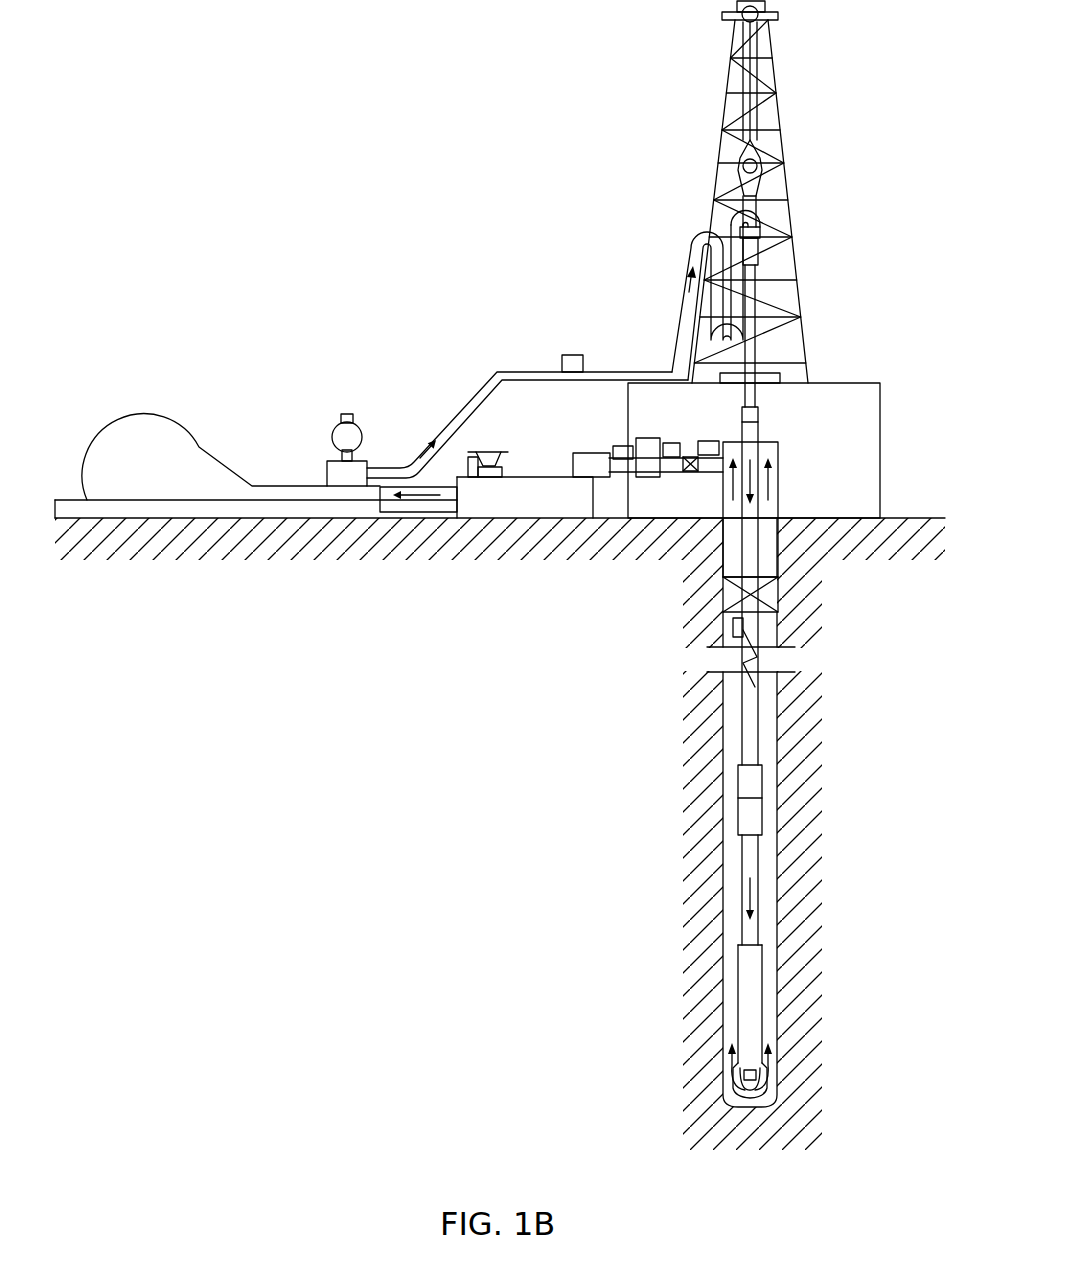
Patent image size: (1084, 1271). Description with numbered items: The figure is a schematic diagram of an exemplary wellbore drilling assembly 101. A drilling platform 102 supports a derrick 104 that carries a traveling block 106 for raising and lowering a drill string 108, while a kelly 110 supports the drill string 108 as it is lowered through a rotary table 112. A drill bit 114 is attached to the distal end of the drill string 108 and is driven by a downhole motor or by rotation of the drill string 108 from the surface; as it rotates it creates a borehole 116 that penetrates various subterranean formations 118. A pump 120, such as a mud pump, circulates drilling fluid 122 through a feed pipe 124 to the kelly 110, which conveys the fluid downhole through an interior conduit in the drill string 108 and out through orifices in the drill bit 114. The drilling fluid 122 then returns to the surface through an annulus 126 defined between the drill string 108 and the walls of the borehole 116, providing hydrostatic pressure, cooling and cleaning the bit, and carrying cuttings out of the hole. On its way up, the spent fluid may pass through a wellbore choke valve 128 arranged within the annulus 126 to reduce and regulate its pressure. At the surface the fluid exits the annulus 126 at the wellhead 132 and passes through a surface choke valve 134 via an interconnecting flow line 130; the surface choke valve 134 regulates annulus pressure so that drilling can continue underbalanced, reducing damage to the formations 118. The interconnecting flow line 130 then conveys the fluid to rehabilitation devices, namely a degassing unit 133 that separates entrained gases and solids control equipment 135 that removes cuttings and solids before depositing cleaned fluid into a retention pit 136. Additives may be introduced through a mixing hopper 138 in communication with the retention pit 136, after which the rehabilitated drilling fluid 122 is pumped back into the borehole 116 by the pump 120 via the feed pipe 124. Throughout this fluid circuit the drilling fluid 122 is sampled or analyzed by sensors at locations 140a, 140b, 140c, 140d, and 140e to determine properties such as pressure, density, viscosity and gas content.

The wellbore drilling assembly 101 is at (458, 88).
The drilling platform 102 is at (880, 390).
The derrick 104 is at (790, 103).
The traveling block 106 is at (766, 152).
The drill string 108 is at (760, 640).
The kelly 110 is at (752, 288).
The rotary table 112 is at (796, 380).
The drill bit 114 is at (770, 1082).
The borehole 116 is at (790, 723).
The subterranean formations 118 is at (611, 766).
The pump 120 is at (159, 481).
The drilling fluid 122 is at (408, 469).
The feed pipe 124 is at (493, 362).
The annulus 126 is at (765, 897).
The wellbore choke valve 128 is at (785, 590).
The interconnecting flow line 130 is at (718, 522).
The wellhead 132 is at (775, 425).
The degassing unit 133 is at (640, 475).
The surface choke valve 134 is at (691, 471).
The solids control equipment 135 is at (594, 453).
The retention pit 136 is at (541, 509).
The mixing hopper 138 is at (490, 460).
The sampling location 140a is at (574, 355).
The sampling location 140b is at (710, 441).
The sampling location 140c is at (624, 446).
The sampling location 140d is at (646, 478).
The sampling location 140e is at (745, 628).